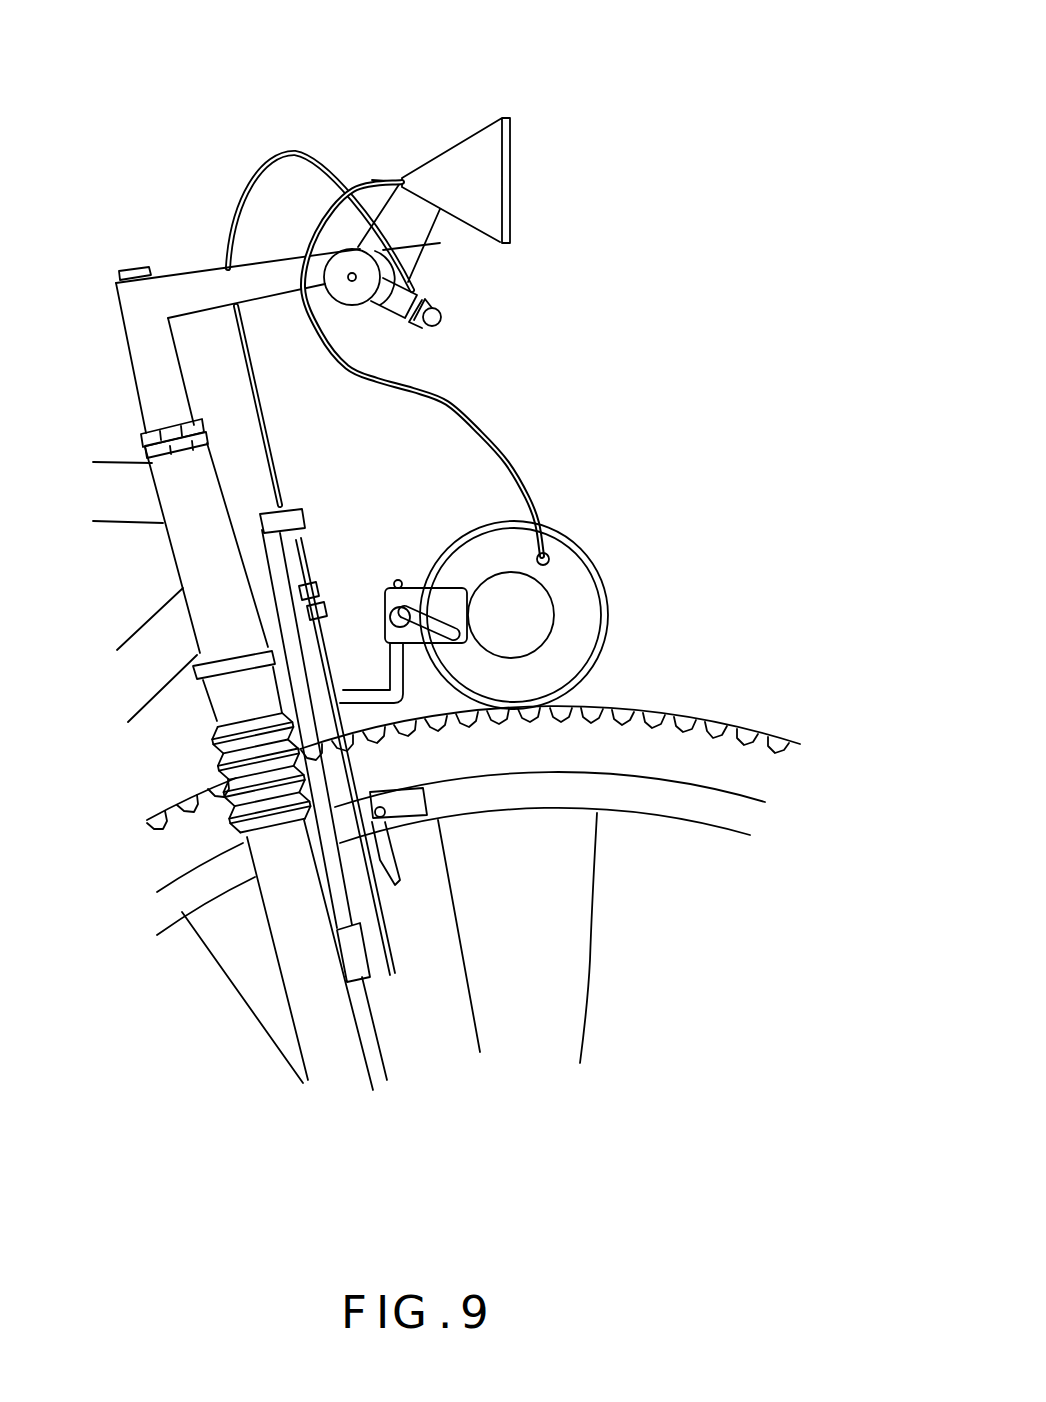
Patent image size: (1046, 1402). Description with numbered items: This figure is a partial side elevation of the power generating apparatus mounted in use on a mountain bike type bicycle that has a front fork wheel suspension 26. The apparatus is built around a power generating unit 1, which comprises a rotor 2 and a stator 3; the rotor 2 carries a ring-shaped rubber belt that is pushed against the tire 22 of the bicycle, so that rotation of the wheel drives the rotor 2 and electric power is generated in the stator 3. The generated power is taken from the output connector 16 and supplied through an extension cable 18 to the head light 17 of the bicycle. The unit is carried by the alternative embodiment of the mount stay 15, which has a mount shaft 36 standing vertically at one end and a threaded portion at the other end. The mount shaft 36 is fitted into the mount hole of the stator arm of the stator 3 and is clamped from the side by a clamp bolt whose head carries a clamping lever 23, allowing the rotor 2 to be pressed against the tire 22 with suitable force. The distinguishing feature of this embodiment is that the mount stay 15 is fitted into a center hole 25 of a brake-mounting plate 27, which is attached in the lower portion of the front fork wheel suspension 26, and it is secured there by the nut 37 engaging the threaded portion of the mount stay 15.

The power generating unit 1 is at (597, 503).
The rotor 2 is at (567, 537).
The stator 3 is at (523, 613).
The mount stay 15 is at (367, 700).
The output connector 16 is at (550, 558).
The head light 17 is at (488, 162).
The extension cable 18 is at (372, 180).
The tire 22 is at (523, 748).
The clamping lever 23 is at (488, 630).
The center hole 25 is at (292, 695).
The front fork wheel suspension 26 is at (270, 803).
The brake-mounting plate 27 is at (274, 515).
The mount shaft 36 is at (400, 673).
The nut 37 is at (305, 595).